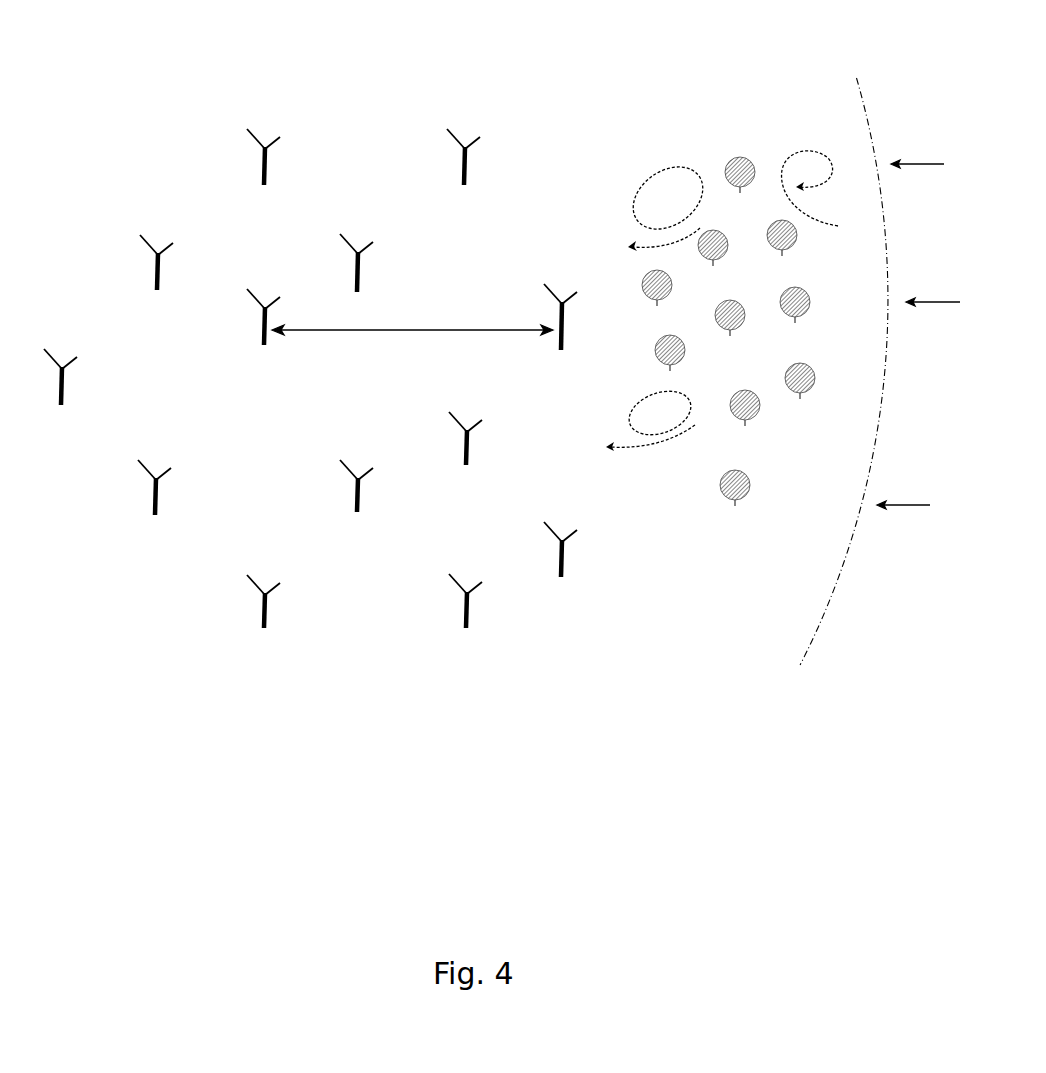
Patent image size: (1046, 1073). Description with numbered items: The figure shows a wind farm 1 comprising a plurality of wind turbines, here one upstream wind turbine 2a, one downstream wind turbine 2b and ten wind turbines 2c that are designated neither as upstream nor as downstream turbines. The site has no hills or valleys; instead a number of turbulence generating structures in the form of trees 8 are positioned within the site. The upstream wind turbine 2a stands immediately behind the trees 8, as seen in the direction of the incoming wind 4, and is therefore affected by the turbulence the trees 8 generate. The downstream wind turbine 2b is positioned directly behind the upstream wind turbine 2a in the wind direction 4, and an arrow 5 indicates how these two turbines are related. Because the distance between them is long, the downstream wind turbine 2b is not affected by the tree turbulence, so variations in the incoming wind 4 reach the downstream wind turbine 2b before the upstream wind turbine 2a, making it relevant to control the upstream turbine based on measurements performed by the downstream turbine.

The wind farm 1 is at (151, 101).
The upstream wind turbine 2a is at (565, 347).
The downstream wind turbine 2b is at (258, 337).
The wind turbines 2c is at (213, 660).
The incoming wind 4 is at (920, 163).
The arrow 5 is at (410, 332).
The trees 8 is at (735, 168).